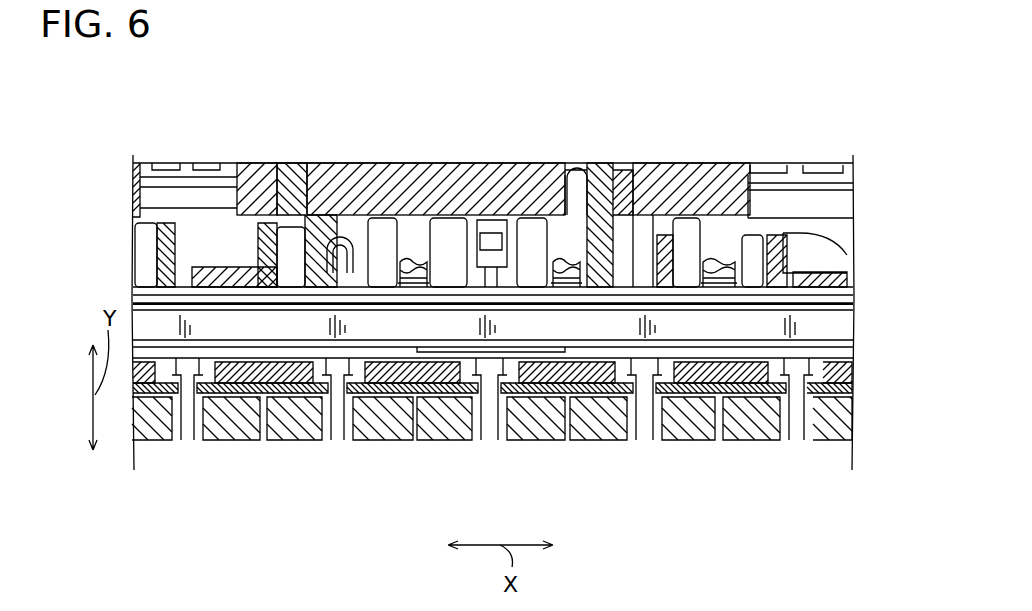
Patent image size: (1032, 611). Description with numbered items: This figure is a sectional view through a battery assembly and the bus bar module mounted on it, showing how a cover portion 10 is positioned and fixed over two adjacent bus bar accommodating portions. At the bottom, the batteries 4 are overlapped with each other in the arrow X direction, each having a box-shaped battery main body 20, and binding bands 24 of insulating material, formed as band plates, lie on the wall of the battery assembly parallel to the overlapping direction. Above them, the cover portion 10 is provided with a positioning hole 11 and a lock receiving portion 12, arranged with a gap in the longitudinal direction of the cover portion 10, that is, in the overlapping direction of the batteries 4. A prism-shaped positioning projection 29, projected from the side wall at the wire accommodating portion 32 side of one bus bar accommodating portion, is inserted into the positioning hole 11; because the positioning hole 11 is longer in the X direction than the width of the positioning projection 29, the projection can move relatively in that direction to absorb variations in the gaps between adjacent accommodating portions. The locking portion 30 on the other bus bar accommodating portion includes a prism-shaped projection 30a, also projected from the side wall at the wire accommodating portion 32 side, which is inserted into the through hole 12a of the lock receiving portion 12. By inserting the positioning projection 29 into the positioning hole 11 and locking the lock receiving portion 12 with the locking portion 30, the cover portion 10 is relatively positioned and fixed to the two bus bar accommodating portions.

The battery 4 is at (492, 437).
The cover portion 10 is at (452, 163).
The positioning hole 11 is at (620, 170).
The lock receiving portion 12 is at (352, 193).
The through hole 12a is at (303, 163).
The battery main body 20 is at (297, 423).
The binding band 24 is at (238, 330).
The positioning projection 29 is at (597, 178).
The locking portion 30 is at (302, 139).
The projection 30a is at (287, 163).
The wire accommodating portion 32 is at (216, 163).